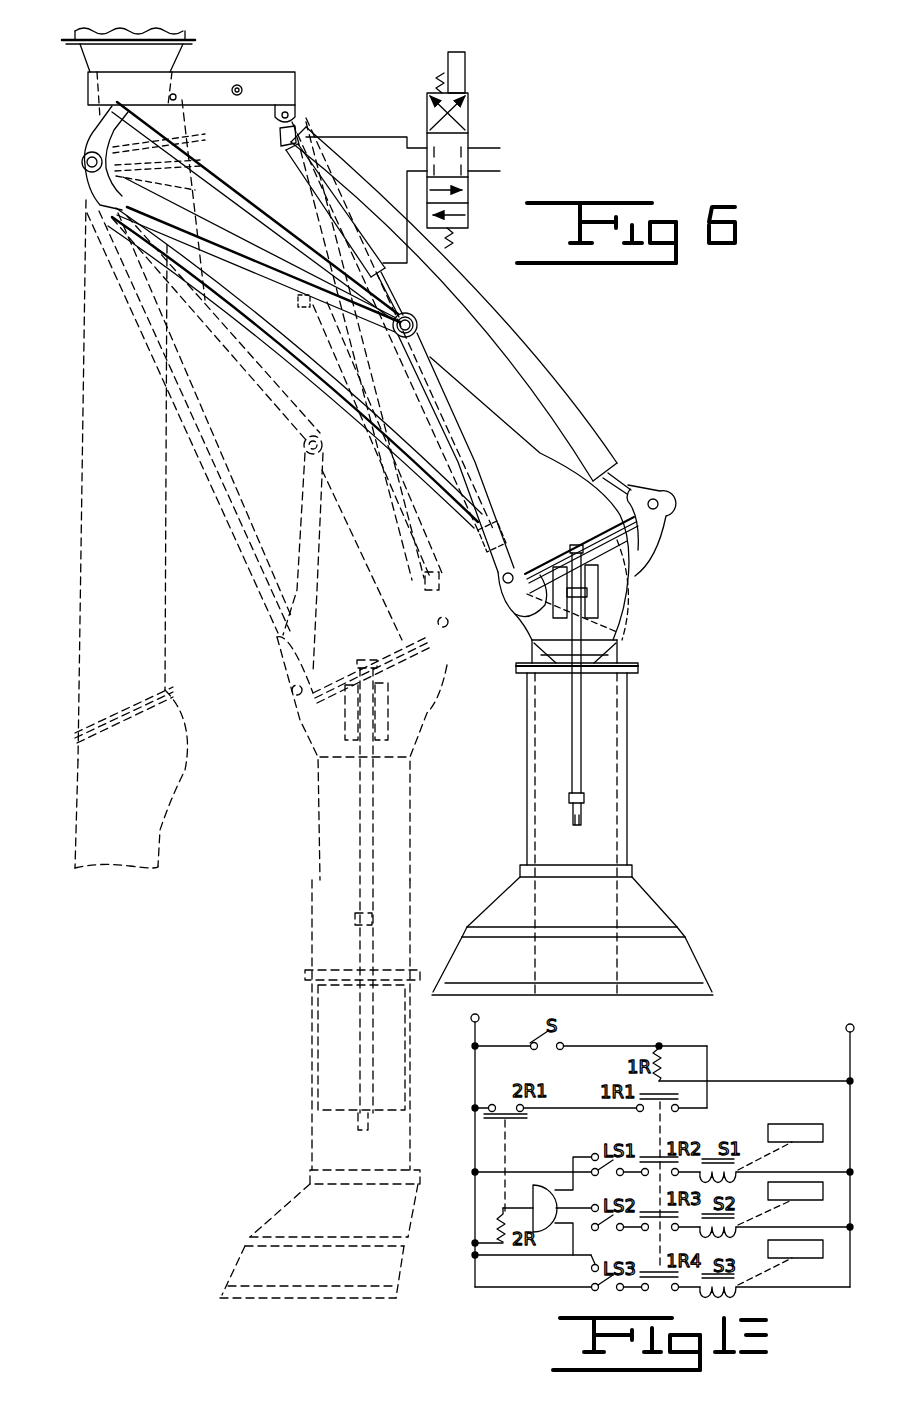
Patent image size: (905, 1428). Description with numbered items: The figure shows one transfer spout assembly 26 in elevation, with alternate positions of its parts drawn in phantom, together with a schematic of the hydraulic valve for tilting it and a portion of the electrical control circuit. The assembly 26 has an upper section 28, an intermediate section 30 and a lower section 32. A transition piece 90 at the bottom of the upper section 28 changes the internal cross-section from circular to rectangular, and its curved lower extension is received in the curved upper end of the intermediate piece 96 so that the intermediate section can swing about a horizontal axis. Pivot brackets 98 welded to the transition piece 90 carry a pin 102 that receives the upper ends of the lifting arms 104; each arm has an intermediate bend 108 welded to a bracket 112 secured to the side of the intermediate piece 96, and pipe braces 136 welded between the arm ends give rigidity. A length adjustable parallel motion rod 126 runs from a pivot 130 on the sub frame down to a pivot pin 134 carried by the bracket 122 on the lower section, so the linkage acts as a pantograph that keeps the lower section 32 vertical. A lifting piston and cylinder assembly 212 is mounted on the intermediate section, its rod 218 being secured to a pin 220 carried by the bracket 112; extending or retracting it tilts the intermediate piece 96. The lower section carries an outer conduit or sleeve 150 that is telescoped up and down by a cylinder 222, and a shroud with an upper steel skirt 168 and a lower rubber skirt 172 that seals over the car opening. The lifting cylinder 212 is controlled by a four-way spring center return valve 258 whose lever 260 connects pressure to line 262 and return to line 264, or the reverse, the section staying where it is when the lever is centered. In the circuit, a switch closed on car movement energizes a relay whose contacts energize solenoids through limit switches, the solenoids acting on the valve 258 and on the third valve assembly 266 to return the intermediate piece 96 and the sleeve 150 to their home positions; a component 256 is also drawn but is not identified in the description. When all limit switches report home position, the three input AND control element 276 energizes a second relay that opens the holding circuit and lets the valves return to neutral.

In FIG. 6, the transfer spout assembly 26 is at (592, 406).
In FIG. 6, the upper section 28 is at (196, 37).
In FIG. 6, the intermediate section 30 is at (470, 376).
In FIG. 6, the lower section 32 is at (642, 788).
In FIG. 6, the transition piece 90 is at (88, 60).
In FIG. 6, the intermediate piece 96 is at (478, 423).
In FIG. 6, the pivot brackets 98 is at (93, 136).
In FIG. 6, the pin 102 is at (86, 166).
In FIG. 6, the lifting arm 104 is at (253, 255).
In FIG. 6, the intermediate bends 108 is at (398, 298).
In FIG. 6, the brackets 112 is at (415, 332).
In FIG. 6, the bracket 122 is at (656, 540).
In FIG. 6, the length adjustable parallel motion rod 126 is at (460, 314).
In FIG. 6, the pivots 130 is at (244, 88).
In FIG. 6, the pivot pin 134 is at (662, 506).
In FIG. 6, the pipe braces 136 is at (407, 477).
In FIG. 6, the outer conduit or sleeve 150 is at (605, 815).
In FIG. 6, the upper steel skirt 168 is at (650, 914).
In FIG. 6, the lower rubber skirt 172 is at (690, 966).
In FIG. 6, the lifting piston and cylinder assembly 212 is at (326, 192).
In FIG. 6, the rod 218 is at (398, 292).
In FIG. 6, the pin 220 is at (406, 343).
In FIG. 6, the cylinder 222 is at (584, 720).
In FIG. 13, the first actuator 256 is at (795, 1120).
In FIG. 6, the four-way lever operated spring center return valve 258 is at (470, 104).
In FIG. 13, the four-way lever operated spring center return valve 258 is at (789, 1182).
In FIG. 6, the lever 260 is at (486, 72).
In FIG. 6, the line 262 is at (349, 137).
In FIG. 6, the line 264 is at (407, 188).
In FIG. 13, the third four-way lever operated spring center return valve assembly 266 is at (789, 1240).
In FIG. 13, the three input AND control element 276 is at (532, 1185).